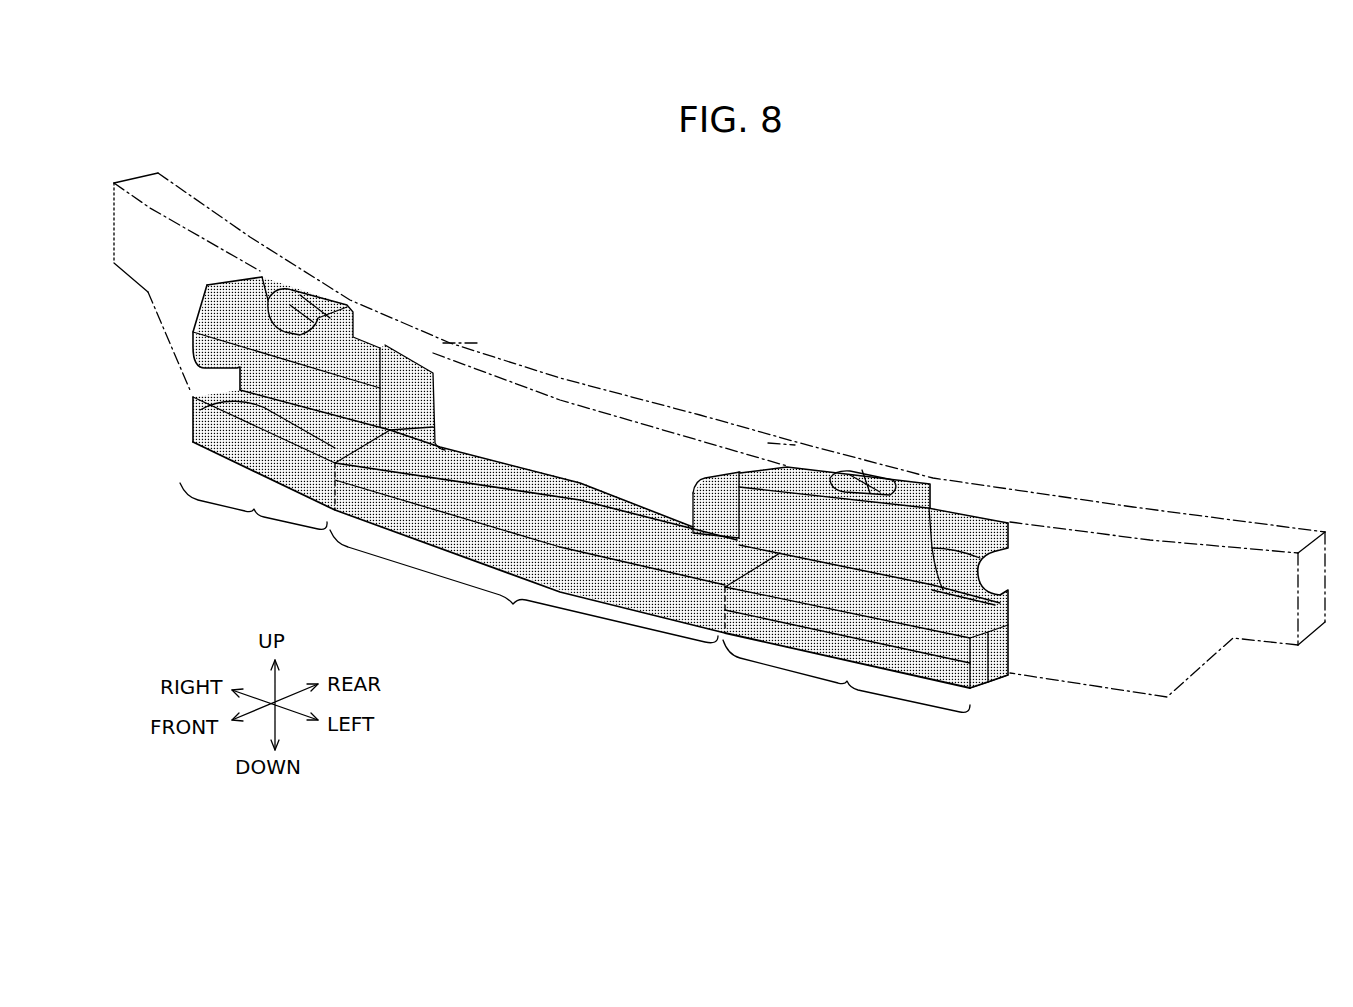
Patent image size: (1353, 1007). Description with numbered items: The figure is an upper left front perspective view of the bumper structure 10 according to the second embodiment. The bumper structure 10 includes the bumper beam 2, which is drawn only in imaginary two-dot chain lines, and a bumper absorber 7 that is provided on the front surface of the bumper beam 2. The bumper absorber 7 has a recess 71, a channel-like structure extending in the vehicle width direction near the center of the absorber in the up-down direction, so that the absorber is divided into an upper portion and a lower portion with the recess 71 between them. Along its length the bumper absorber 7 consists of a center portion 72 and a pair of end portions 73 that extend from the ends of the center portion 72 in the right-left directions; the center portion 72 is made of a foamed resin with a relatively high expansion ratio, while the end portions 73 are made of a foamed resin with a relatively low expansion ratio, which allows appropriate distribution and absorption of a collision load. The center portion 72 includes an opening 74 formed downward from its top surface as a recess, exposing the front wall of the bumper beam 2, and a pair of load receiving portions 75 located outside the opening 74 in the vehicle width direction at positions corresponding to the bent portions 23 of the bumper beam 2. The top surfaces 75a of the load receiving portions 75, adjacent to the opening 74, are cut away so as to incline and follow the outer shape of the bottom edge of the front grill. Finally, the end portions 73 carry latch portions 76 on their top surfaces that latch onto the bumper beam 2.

The bumper beam 2 is at (1173, 507).
The bumper absorber 7 is at (1000, 697).
The bumper structure 10 is at (725, 331).
The bent portions 23 is at (445, 343).
The recess 71 is at (192, 421).
The center portion 72 is at (581, 559).
The end portions 73 is at (554, 478).
The opening 74 is at (537, 477).
The load receiving portions 75 is at (290, 332).
The top surfaces 75a is at (400, 372).
The latch portions 76 is at (328, 293).